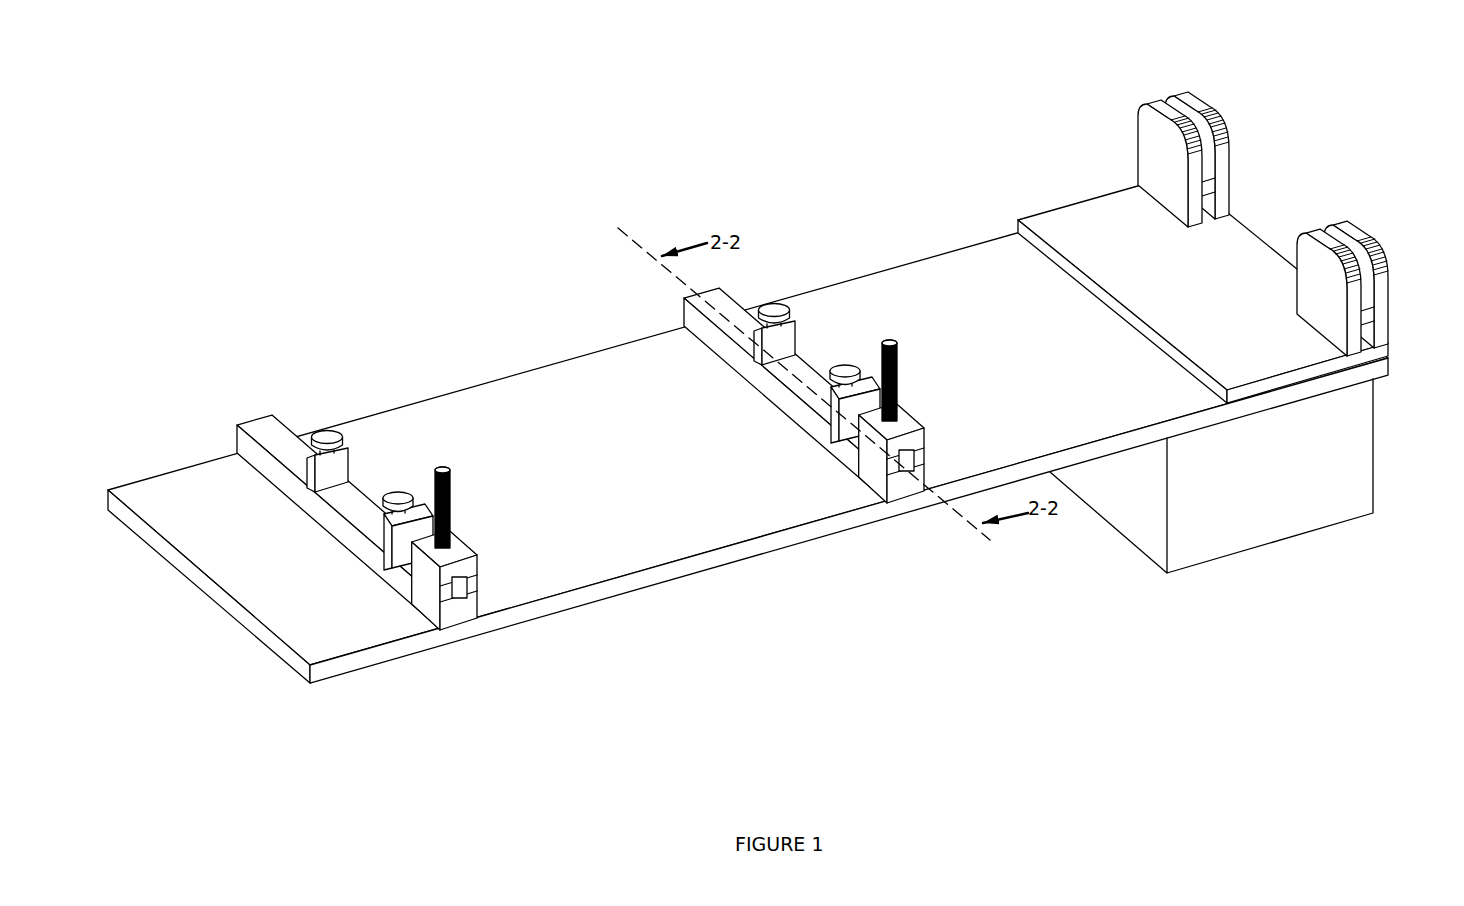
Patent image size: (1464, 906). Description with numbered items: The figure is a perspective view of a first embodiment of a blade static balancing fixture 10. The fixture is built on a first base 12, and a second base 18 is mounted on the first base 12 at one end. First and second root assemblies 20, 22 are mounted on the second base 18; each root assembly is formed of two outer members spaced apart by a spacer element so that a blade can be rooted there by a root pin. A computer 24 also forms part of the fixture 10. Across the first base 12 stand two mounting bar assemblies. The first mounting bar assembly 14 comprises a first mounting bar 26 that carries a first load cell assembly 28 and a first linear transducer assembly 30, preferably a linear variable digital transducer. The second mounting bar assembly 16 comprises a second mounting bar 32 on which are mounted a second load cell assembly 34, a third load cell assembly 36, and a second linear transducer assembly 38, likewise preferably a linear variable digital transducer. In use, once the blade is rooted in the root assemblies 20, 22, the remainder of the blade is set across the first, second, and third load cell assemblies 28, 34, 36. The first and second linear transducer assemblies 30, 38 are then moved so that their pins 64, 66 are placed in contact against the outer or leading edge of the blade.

The blade static balancing fixture 10 is at (878, 250).
The first base 12 is at (962, 262).
The first mounting bar assembly 14 is at (835, 391).
The second mounting bar assembly 16 is at (402, 499).
The second base 18 is at (1125, 281).
The first root assembly 20 is at (1375, 235).
The second root assembly 22 is at (1212, 104).
The computer 24 is at (1290, 506).
The first mounting bar 26 is at (802, 394).
The first load cell assembly 28 is at (824, 322).
The first linear transducer assembly 30 is at (923, 427).
The second mounting bar 32 is at (315, 513).
The second load cell assembly 34 is at (355, 445).
The third load cell assembly 36 is at (416, 478).
The second linear transducer assembly 38 is at (483, 540).
The pin 64 is at (934, 355).
The pin 66 is at (447, 470).